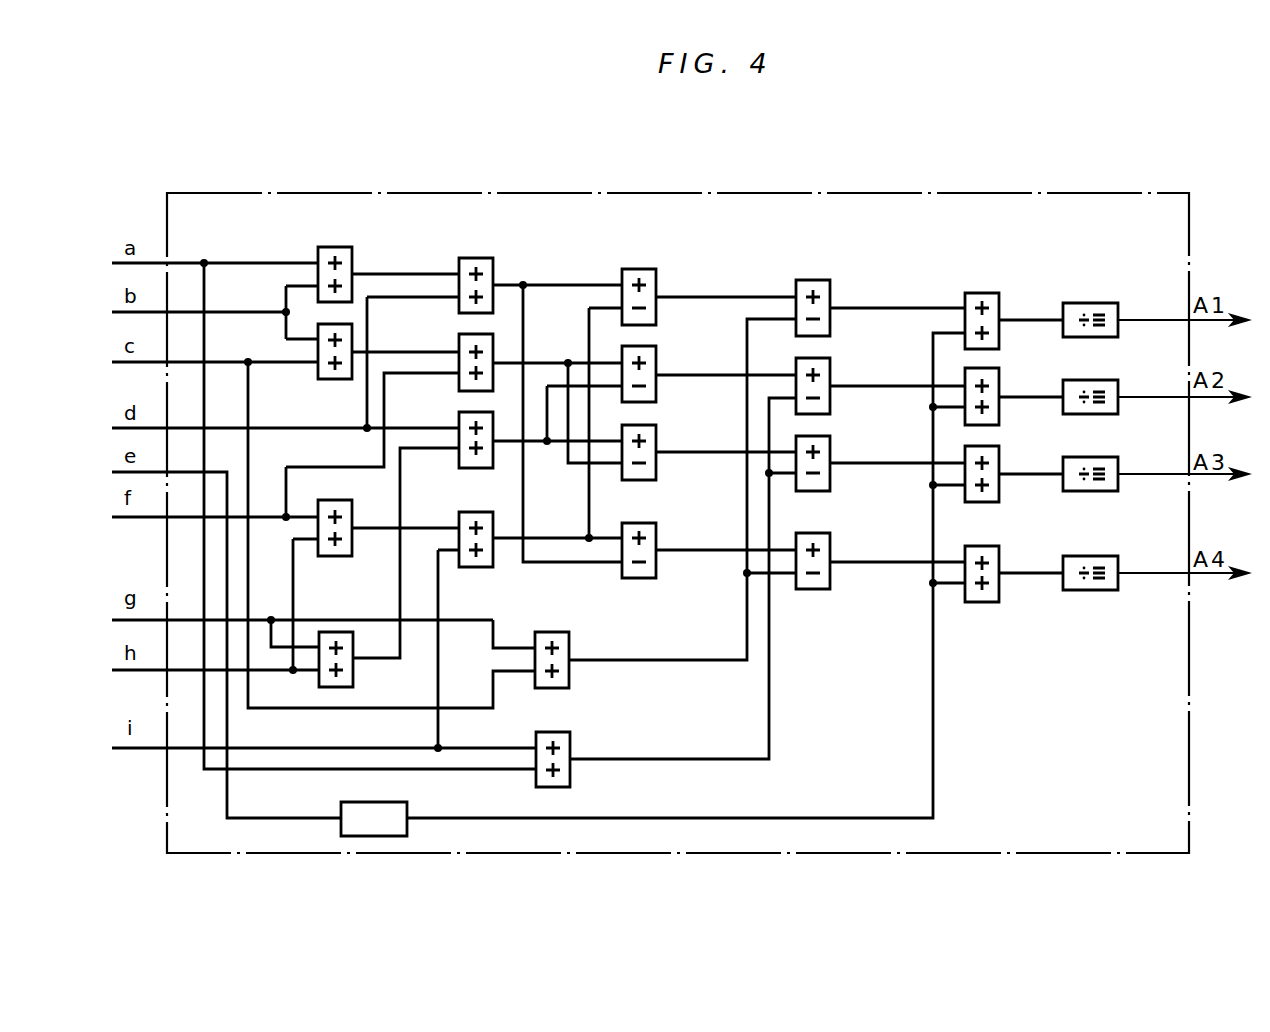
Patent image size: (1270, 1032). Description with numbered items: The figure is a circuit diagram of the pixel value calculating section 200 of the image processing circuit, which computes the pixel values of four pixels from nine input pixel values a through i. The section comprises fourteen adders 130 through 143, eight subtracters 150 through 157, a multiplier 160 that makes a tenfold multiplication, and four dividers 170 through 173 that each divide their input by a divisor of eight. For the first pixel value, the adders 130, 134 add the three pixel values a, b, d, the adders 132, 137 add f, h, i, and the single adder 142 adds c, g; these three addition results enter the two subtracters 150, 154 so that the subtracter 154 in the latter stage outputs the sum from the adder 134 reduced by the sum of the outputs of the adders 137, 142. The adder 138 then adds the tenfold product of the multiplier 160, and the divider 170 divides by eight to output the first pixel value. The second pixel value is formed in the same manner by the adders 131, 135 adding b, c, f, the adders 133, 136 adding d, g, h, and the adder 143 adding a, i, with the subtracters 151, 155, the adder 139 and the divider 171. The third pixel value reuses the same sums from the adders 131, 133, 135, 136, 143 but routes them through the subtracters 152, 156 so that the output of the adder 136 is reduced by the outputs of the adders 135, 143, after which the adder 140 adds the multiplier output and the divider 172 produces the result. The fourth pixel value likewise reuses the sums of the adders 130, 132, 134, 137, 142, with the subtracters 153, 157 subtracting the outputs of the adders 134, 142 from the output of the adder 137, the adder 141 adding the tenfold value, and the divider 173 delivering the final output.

The adder 130 is at (343, 247).
The adder 131 is at (340, 380).
The adder 132 is at (333, 556).
The adder 133 is at (353, 670).
The adder 134 is at (475, 258).
The adder 135 is at (459, 339).
The adder 136 is at (459, 412).
The adder 137 is at (468, 512).
The adder 138 is at (985, 293).
The adder 139 is at (1037, 352).
The adder 140 is at (988, 446).
The adder 141 is at (987, 546).
The adder 142 is at (553, 632).
The adder 143 is at (607, 708).
The subtracter 150 is at (643, 269).
The subtracter 151 is at (655, 355).
The subtracter 152 is at (655, 430).
The subtracter 153 is at (655, 528).
The subtracter 154 is at (818, 280).
The subtracter 155 is at (829, 358).
The subtracter 156 is at (829, 436).
The subtracter 157 is at (829, 533).
The multiplier 160 is at (407, 813).
The divider 170 is at (1093, 303).
The divider 171 is at (1087, 380).
The divider 172 is at (1092, 457).
The divider 173 is at (1093, 556).
The pixel value calculating section 200 is at (1013, 193).